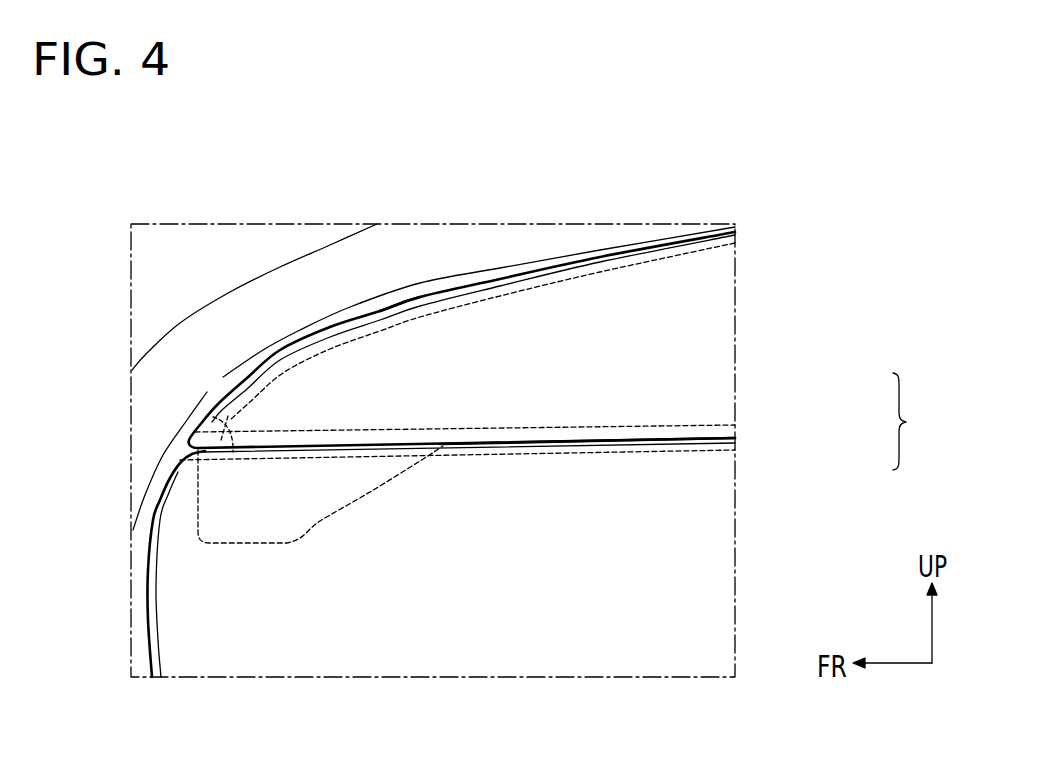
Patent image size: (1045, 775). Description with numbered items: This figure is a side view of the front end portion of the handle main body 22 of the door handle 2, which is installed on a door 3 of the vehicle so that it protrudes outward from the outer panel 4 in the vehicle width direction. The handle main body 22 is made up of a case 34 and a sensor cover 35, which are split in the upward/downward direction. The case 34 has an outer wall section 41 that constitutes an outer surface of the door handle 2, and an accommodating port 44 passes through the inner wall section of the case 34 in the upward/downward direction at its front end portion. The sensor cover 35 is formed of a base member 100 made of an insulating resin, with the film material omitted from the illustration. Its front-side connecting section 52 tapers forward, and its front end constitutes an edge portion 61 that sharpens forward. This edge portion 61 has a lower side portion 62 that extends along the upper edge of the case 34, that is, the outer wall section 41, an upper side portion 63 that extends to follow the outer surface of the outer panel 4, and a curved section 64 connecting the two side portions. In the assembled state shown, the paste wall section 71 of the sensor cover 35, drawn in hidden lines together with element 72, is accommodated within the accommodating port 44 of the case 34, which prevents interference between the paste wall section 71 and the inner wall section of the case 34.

The door handle 2 is at (703, 209).
The door 3 is at (254, 328).
The outer panel 4 is at (192, 260).
The handle main body 22 is at (572, 410).
The case 34 is at (698, 524).
The sensor cover 35 is at (631, 358).
The front-side connecting section 52 is at (700, 378).
The outer wall section 41 is at (675, 598).
The accommodating port 44 is at (213, 417).
The edge portion 61 is at (473, 278).
The curved section 64 is at (422, 338).
The lower side portion 62 is at (465, 447).
The upper side portion 63 is at (337, 347).
The paste wall section 71 is at (320, 550).
The garnish body 72 is at (275, 518).
The base member 100 is at (713, 297).